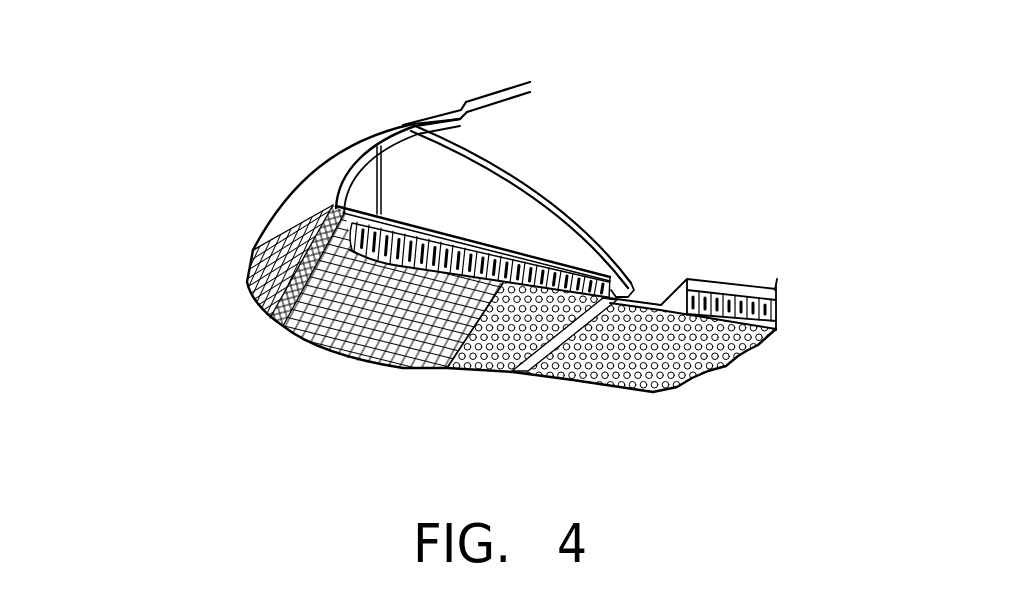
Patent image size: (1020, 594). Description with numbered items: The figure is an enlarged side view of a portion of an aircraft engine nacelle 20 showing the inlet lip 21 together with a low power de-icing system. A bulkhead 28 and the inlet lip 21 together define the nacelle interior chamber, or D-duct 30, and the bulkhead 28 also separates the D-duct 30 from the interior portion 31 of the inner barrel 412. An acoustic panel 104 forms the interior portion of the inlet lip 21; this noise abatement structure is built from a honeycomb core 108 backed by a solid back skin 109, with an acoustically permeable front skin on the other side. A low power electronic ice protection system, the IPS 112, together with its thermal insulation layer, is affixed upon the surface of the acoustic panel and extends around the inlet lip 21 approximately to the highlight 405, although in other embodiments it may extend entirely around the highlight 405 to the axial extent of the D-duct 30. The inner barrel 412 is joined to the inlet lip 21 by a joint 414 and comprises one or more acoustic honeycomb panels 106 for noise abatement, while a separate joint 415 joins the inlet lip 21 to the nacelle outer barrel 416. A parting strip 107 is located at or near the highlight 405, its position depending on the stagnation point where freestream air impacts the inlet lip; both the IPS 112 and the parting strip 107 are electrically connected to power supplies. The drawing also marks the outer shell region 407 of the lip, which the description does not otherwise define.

The aircraft engine nacelle 20 is at (247, 134).
The inlet lip 21 is at (388, 372).
The bulkhead 28 is at (557, 193).
The D-duct 30 is at (485, 205).
The interior portion of inner barrel 31 is at (674, 167).
The acoustic panel 104 is at (556, 264).
The acoustic honeycomb panels 106 is at (743, 282).
The parting strip 107 is at (277, 318).
The honeycomb core 108 is at (483, 247).
The solid back skin 109 is at (403, 220).
The low power electronic ice protection system (IPS) 112 is at (353, 340).
The highlight 405 is at (247, 256).
The shell surface 407 is at (323, 178).
The inner barrel 412 is at (574, 378).
The joint 414 is at (648, 303).
The joint 415 is at (417, 120).
The nacelle outer barrel 416 is at (478, 95).